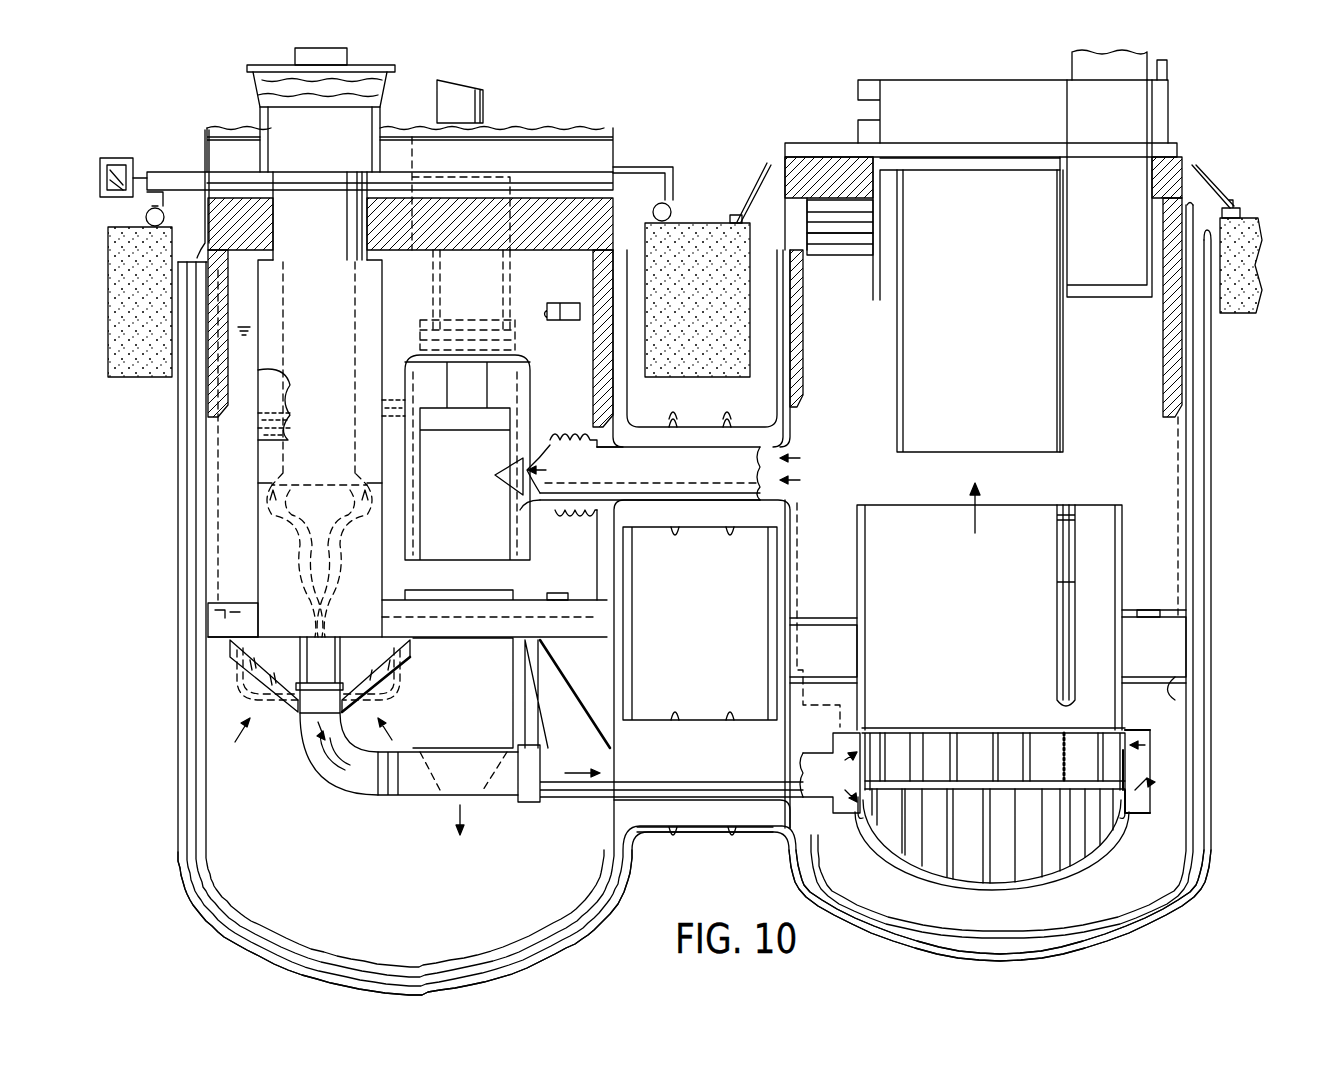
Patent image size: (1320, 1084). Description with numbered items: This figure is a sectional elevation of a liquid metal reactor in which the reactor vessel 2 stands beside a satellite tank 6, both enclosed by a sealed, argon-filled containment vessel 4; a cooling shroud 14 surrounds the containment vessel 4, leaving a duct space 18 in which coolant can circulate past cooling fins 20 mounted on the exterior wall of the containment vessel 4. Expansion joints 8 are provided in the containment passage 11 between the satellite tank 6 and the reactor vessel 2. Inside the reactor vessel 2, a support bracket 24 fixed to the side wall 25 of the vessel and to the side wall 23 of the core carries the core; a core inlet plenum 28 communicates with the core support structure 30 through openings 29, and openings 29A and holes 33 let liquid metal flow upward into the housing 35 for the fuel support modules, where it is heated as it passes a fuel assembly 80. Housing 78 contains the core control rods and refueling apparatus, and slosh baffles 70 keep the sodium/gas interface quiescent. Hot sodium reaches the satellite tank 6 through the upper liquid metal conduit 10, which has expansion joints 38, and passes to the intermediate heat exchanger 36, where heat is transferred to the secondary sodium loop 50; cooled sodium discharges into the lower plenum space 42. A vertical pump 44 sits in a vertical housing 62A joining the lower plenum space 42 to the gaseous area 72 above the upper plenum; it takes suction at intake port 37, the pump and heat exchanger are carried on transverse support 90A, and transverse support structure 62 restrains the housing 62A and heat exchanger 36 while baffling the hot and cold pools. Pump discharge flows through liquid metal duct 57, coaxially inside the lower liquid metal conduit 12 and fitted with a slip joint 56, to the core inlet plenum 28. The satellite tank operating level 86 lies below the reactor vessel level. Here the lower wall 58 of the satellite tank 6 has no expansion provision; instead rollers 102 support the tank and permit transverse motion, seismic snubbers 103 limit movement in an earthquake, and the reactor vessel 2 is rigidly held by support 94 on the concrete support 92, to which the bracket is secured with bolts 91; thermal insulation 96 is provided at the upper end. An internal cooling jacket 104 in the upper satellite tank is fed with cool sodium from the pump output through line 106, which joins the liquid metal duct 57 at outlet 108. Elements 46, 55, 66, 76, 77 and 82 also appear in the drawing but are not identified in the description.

The reactor vessel 2 is at (1130, 885).
The containment vessel 4 is at (1080, 930).
The satellite tank 6 is at (255, 910).
The expansion joints 8 is at (673, 420).
The upper liquid metal conduit 10 is at (668, 453).
The containment passage 11 is at (700, 845).
The lower liquid metal conduit 12 is at (738, 748).
The cooling shroud 14 is at (626, 882).
The duct space 18 is at (565, 945).
The cooling fins 20 is at (178, 435).
The side wall of reactor core 23 is at (860, 653).
The support bracket 24 is at (1168, 645).
The side wall of reactor vessel 25 is at (1188, 688).
The core inlet plenum 28 is at (1140, 782).
The openings 29 is at (855, 815).
The openings 29A is at (860, 745).
The core support structure 30 is at (1015, 870).
The holes 33 is at (1060, 745).
The housing for the fuel support modules 35 is at (805, 390).
The intermediate heat exchanger 36 is at (528, 405).
The intake port 37 is at (270, 505).
The expansion joints 38 is at (568, 438).
The lower plenum space 42 is at (417, 892).
The vertical pump 44 is at (373, 355).
The pump drive 46 is at (380, 78).
The secondary sodium loop 50 is at (482, 105).
The pipe flange 55 is at (530, 795).
The slip joint 56 is at (392, 792).
The liquid metal duct 57 is at (318, 775).
The lower wall of satellite tank 58 is at (615, 735).
The transverse support structure 62 is at (217, 630).
The vertical housing 62A is at (257, 483).
The insulation liner 66 is at (800, 525).
The slosh baffles 70 is at (553, 322).
The gaseous area 72 is at (500, 282).
The closure head plate 76 is at (825, 165).
The pipe 77 is at (865, 220).
The housing 78 is at (1063, 400).
The fuel assembly 80 is at (1075, 562).
The spacer pad 82 is at (557, 593).
The satellite tank operating level 86 is at (243, 328).
The transverse support 90A is at (213, 156).
The bolts 91 is at (735, 213).
The concrete support 92 is at (135, 362).
The reactor vessel suspension bracket 94 is at (750, 185).
The thermal insulation 96 is at (1185, 363).
The rollers 102 is at (145, 222).
The seismic snubbers 103 is at (108, 160).
The internal cooling jacket 104 is at (212, 538).
The line 106 is at (400, 688).
The outlet 108 is at (305, 712).